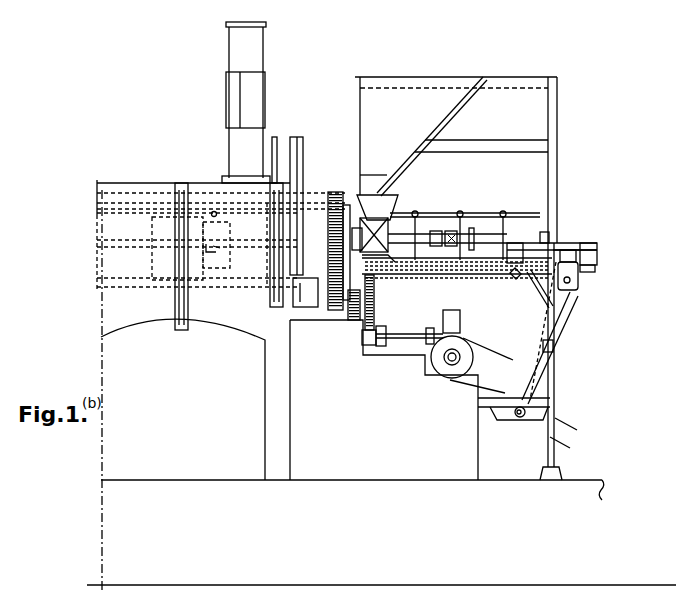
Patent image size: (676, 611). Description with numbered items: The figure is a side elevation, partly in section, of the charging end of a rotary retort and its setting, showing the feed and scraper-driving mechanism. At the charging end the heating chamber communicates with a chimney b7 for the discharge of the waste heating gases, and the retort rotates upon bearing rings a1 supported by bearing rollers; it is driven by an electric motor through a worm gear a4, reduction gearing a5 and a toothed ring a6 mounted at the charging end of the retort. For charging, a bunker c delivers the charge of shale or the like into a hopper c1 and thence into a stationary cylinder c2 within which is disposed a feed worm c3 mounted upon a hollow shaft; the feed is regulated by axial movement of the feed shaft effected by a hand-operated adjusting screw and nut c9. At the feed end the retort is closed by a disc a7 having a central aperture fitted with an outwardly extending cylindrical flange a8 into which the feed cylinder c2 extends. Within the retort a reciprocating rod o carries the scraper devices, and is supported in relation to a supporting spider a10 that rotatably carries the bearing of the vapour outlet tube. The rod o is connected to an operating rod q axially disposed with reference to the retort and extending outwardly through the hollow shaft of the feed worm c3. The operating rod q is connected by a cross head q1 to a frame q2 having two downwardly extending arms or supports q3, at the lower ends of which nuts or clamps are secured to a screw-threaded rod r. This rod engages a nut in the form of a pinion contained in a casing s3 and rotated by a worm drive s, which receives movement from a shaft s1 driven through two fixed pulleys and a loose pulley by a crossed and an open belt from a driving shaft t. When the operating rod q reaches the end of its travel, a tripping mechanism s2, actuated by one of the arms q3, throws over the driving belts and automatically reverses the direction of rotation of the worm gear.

The chimney b7 is at (252, 43).
The bunker c is at (398, 108).
The hopper c1 is at (372, 193).
The bearing rings a1 is at (306, 197).
The disc a7 is at (370, 216).
The cylindrical flange a8 is at (392, 232).
The feed worm c3 is at (441, 235).
The adjusting screw and nut c9 is at (490, 232).
The operating rod q is at (517, 241).
The cross head q1 is at (548, 233).
The frame q2 is at (566, 245).
The arms or supports q3 is at (593, 256).
The casing s3 is at (566, 264).
The screw-threaded rod r is at (580, 270).
The worm drive s is at (579, 285).
The shaft s1 is at (570, 292).
The tripping mechanism s2 is at (528, 284).
The stationary cylinder c2 is at (395, 262).
The toothed ring a6 is at (326, 286).
The reduction gearing a5 is at (371, 333).
The worm gear a4 is at (445, 366).
The driving shaft t is at (530, 408).
The reciprocating rod o is at (127, 263).
The supporting spider a10 is at (280, 262).